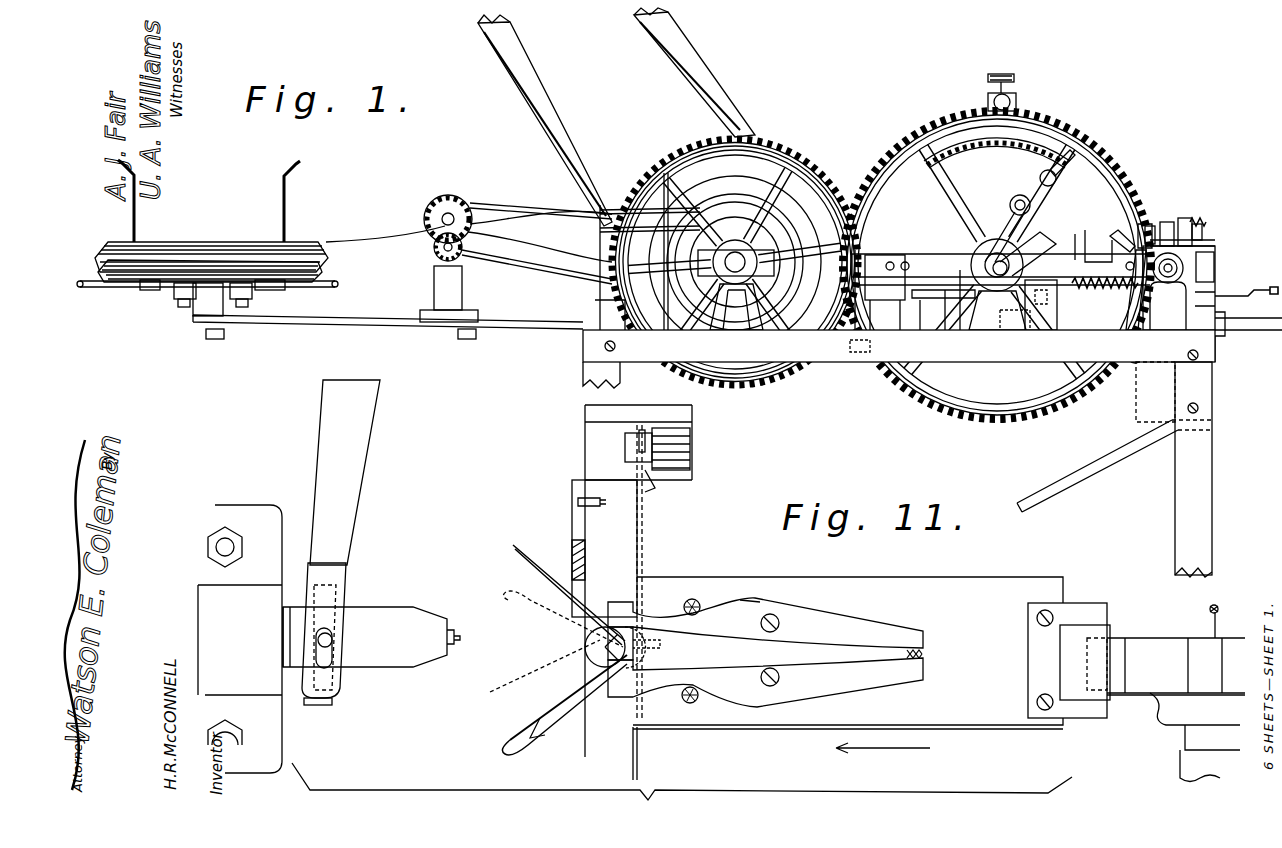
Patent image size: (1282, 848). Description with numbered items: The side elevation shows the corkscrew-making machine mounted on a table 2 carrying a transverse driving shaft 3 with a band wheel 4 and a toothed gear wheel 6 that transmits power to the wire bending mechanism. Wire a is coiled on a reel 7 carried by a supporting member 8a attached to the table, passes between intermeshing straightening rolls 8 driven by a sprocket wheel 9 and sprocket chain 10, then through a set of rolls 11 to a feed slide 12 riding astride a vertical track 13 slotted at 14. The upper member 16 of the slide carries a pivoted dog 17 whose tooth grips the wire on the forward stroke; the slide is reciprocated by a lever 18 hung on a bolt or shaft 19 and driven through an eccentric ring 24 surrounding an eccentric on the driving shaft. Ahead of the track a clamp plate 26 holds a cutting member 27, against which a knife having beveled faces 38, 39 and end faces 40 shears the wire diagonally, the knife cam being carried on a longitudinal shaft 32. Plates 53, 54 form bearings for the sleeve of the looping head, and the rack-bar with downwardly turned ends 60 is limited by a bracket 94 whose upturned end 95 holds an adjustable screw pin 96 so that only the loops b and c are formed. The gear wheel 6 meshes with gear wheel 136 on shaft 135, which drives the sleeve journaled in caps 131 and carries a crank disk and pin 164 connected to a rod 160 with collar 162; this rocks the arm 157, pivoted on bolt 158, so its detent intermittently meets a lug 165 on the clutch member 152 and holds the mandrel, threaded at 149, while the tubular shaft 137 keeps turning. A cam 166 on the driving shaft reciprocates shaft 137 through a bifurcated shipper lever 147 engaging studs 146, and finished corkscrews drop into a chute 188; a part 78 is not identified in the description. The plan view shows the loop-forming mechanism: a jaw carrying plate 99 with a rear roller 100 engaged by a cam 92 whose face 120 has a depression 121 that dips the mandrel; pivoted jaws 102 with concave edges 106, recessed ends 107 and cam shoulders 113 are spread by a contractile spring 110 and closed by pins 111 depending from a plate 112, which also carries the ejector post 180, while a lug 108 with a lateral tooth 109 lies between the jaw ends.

In FIG. 1, the table 2 is at (1145, 459).
In FIG. 1, the main driving shaft 3 is at (790, 205).
In FIG. 1, the driving band wheel 4 is at (748, 176).
In FIG. 1, the toothed gear wheel 6 is at (835, 175).
In FIG. 1, the reel 7 is at (134, 212).
In FIG. 1, the straightening rolls 8 is at (478, 202).
In FIG. 1, the supporting member 8a is at (480, 330).
In FIG. 1, the sprocket wheel 9 is at (440, 200).
In FIG. 1, the sprocket chain 10 is at (545, 268).
In FIG. 1, the set of rolls 11 is at (900, 255).
In FIG. 1, the feed slide 12 is at (1050, 307).
In FIG. 1, the vertical track 13 is at (1110, 200).
In FIG. 1, the slot 14 is at (925, 292).
In FIG. 1, the upper member of slide 16 is at (1050, 140).
In FIG. 1, the dog 17 is at (1105, 215).
In FIG. 1, the lever 18 is at (1180, 232).
In FIG. 1, the bolt or shaft 19 is at (1015, 100).
In FIG. 1, the eccentric ring 24 is at (805, 330).
In FIG. 11, the clamp plate 26 is at (638, 439).
In FIG. 11, the cutting member 27 is at (625, 447).
In FIG. 11, the longitudinal shaft 32 is at (1222, 618).
In FIG. 11, the beveled face of knife 38 is at (690, 456).
In FIG. 11, the beveled face of knife 39 is at (638, 436).
In FIG. 11, the end beveled faces 40 is at (642, 525).
In FIG. 1, the bearing plate 53 is at (1192, 248).
In FIG. 1, the slotted bearing plate 54 is at (1204, 232).
In FIG. 1, the downwardly turned ends 60 is at (1200, 262).
In FIG. 1, the pawl 78 is at (1156, 238).
In FIG. 11, the cam 92 is at (1135, 686).
In FIG. 1, the bracket 94 is at (1222, 338).
In FIG. 1, the upwardly turned end 95 is at (1250, 294).
In FIG. 1, the screw pin 96 is at (1248, 317).
In FIG. 11, the jaw carrying plate 99 is at (997, 650).
In FIG. 11, the roller 100 is at (1108, 632).
In FIG. 11, the jaw 102 is at (745, 700).
In FIG. 11, the concave cut-out 106 is at (660, 612).
In FIG. 11, the recess 107 is at (615, 688).
In FIG. 11, the lug 108 is at (606, 667).
In FIG. 11, the tooth 109 is at (650, 652).
In FIG. 11, the contractile spring 110 is at (924, 654).
In FIG. 11, the pins 111 is at (700, 606).
In FIG. 11, the plate 112 is at (604, 581).
In FIG. 11, the cam shoulders 113 is at (760, 600).
In FIG. 11, the cam face 120 is at (1182, 750).
In FIG. 11, the depression 121 is at (1160, 726).
In FIG. 11, the caps 131 is at (240, 639).
In FIG. 1, the shaft 135 is at (1010, 266).
In FIG. 1, the gear wheel 136 is at (1110, 240).
In FIG. 11, the tubular shaft 137 is at (372, 667).
In FIG. 11, the studs 146 is at (333, 640).
In FIG. 11, the shipper lever 147 is at (320, 452).
In FIG. 11, the screw-threaded end 149 is at (452, 632).
In FIG. 1, the clutch member 152 is at (1185, 225).
In FIG. 1, the arm 157 is at (1170, 330).
In FIG. 1, the bolt 158 is at (1138, 365).
In FIG. 1, the rod 160 is at (1035, 330).
In FIG. 1, the collar 162 is at (1075, 278).
In FIG. 1, the crank pin and disk 164 is at (1030, 206).
In FIG. 1, the lug 165 is at (1190, 248).
In FIG. 1, the cam 166 is at (697, 160).
In FIG. 1, the post 180 is at (1148, 230).
In FIG. 1, the chute 188 is at (1145, 432).
In FIG. 1, the wire a is at (340, 242).
In FIG. 11, the loop b is at (565, 722).
In FIG. 11, the loop c is at (527, 750).